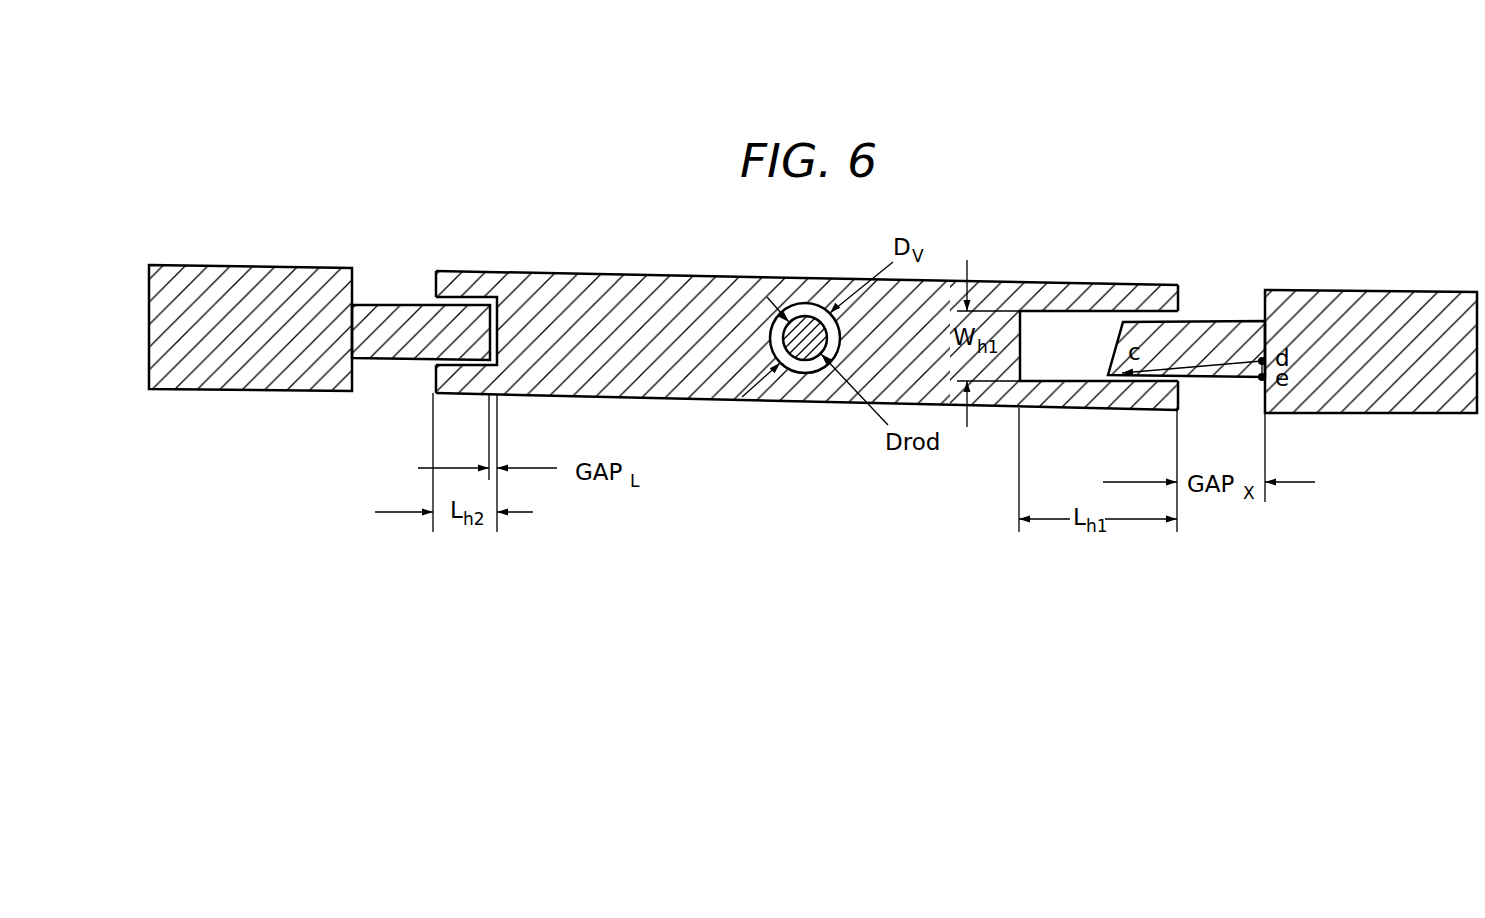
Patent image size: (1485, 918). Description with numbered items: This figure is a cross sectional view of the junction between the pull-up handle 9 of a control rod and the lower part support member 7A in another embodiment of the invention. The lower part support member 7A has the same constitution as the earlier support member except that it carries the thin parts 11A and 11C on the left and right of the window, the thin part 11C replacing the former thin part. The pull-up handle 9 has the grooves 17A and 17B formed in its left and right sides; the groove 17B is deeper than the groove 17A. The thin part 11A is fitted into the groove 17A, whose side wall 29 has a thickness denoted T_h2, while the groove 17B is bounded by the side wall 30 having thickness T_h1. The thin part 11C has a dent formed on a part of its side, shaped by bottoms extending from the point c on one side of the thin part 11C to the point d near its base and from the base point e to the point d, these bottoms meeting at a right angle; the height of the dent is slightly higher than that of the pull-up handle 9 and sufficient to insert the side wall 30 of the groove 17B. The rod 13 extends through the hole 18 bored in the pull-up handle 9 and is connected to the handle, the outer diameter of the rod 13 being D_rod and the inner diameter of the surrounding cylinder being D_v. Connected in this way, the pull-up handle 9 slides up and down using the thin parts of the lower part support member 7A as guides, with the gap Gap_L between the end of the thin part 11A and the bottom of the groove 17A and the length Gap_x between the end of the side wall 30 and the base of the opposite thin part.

The lower part support member 7A is at (228, 283).
The thin part 11A is at (388, 308).
The side wall of the groove 17A 29 is at (468, 280).
The groove 17A is at (498, 325).
The pull-up handle 9 is at (718, 278).
The hole 18 is at (817, 305).
The rod 13 is at (804, 358).
The groove 17B is at (1022, 332).
The side wall of the groove 17B 30 is at (1130, 293).
The thin part 11C is at (1222, 320).